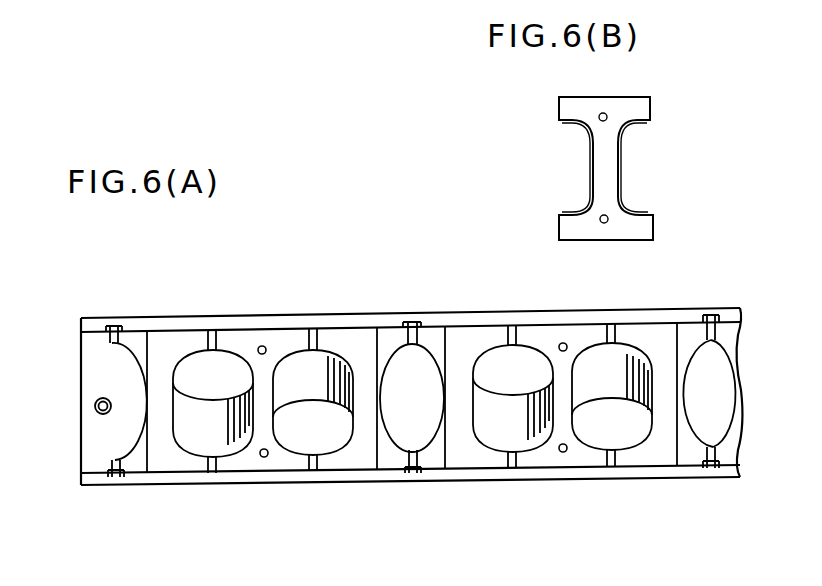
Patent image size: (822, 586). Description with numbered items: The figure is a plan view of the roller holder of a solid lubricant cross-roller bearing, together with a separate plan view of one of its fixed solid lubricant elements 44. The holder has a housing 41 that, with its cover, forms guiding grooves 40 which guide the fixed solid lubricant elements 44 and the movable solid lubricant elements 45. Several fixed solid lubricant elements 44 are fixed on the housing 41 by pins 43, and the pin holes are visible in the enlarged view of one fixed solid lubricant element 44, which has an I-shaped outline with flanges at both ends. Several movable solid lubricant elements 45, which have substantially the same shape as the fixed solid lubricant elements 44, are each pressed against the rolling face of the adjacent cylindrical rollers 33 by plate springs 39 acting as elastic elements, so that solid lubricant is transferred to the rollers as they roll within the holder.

In FIG. 6A, the cylindrical roller 33 is at (297, 370).
In FIG. 6A, the plate spring 39 is at (117, 465).
In FIG. 6A, the guiding groove 40 is at (138, 345).
In FIG. 6A, the housing 41 is at (367, 323).
In FIG. 6A, the pin 43 is at (262, 357).
In FIG. 6A, the fixed solid lubricant element 44 is at (233, 337).
In FIG. 6B, the fixed solid lubricant element 44 is at (567, 107).
In FIG. 6A, the movable solid lubricant element 45 is at (185, 463).